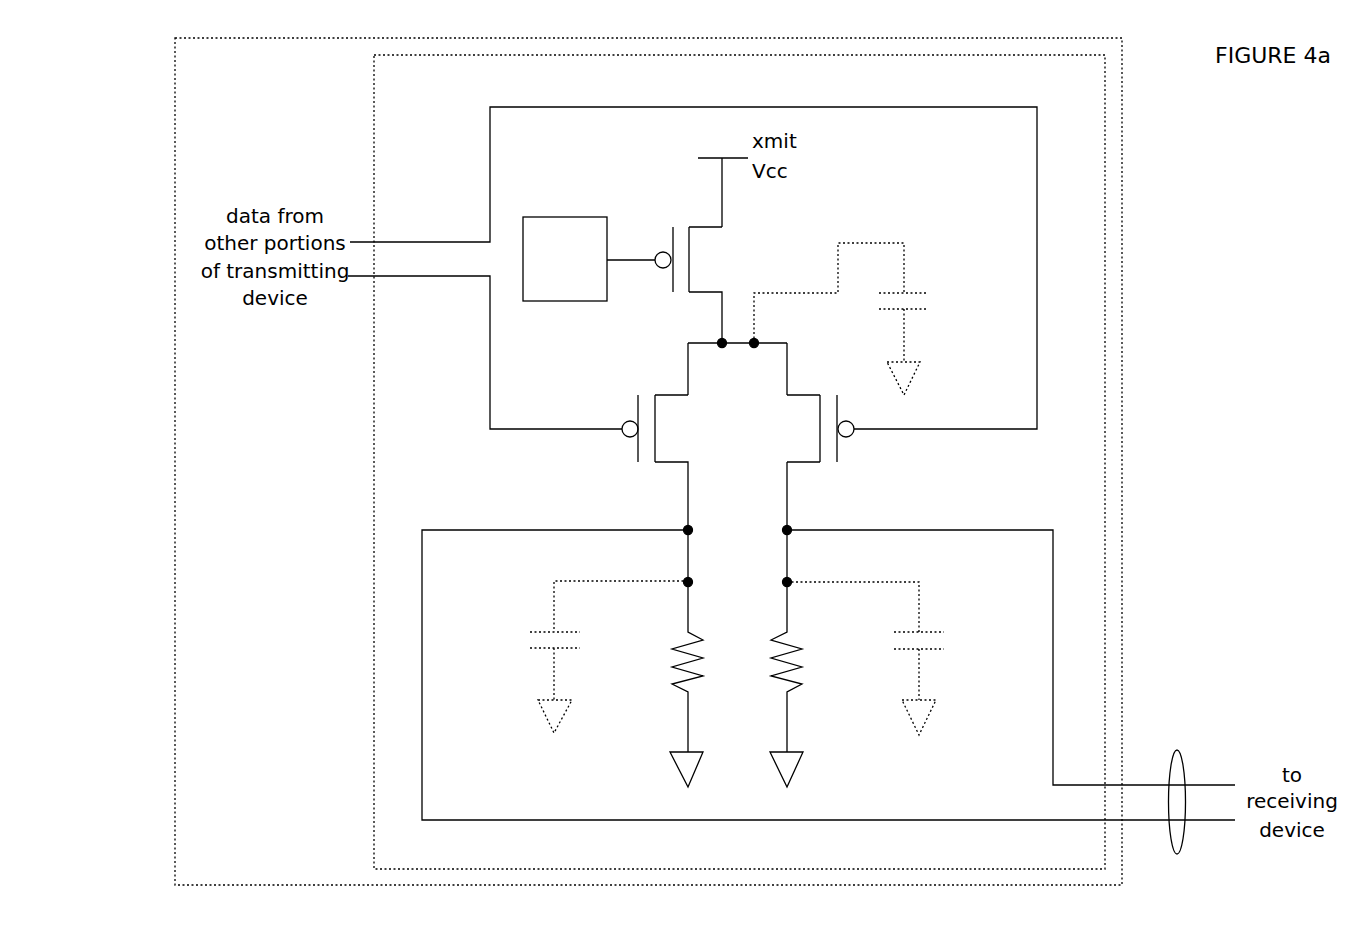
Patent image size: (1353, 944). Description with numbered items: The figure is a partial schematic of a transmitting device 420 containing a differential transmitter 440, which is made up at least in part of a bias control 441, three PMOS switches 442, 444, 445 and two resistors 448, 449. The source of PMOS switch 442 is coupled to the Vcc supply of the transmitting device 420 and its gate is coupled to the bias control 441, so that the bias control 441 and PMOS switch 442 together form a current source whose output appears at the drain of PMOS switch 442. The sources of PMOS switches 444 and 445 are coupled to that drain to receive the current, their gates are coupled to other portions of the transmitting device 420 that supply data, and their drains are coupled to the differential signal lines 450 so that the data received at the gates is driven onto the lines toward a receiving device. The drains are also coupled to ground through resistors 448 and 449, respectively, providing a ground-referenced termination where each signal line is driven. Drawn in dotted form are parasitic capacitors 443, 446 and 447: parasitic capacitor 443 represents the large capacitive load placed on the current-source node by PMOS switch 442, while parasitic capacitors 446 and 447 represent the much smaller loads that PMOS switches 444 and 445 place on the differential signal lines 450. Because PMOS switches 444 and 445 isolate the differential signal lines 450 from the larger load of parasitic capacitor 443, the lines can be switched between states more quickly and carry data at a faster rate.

The transmitting device 420 is at (254, 515).
The differential transmitter 440 is at (494, 515).
The bias control 441 is at (547, 296).
The PMOS switch 442 is at (702, 271).
The parasitic capacitor 443 is at (920, 292).
The PMOS switch 444 is at (669, 440).
The PMOS switch 445 is at (769, 440).
The parasitic capacitor 446 is at (538, 630).
The parasitic capacitor 447 is at (935, 630).
The resistor 448 is at (672, 648).
The resistor 449 is at (800, 648).
The differential signal lines 450 is at (1177, 750).